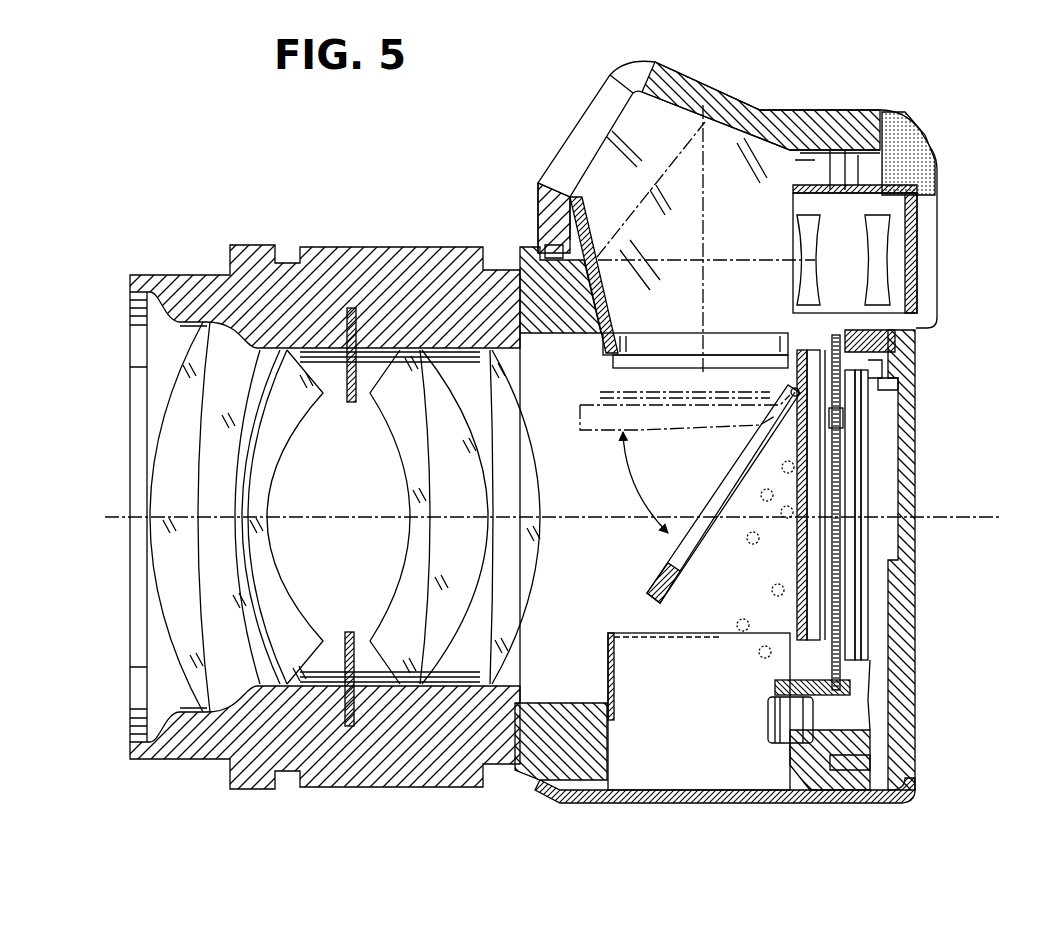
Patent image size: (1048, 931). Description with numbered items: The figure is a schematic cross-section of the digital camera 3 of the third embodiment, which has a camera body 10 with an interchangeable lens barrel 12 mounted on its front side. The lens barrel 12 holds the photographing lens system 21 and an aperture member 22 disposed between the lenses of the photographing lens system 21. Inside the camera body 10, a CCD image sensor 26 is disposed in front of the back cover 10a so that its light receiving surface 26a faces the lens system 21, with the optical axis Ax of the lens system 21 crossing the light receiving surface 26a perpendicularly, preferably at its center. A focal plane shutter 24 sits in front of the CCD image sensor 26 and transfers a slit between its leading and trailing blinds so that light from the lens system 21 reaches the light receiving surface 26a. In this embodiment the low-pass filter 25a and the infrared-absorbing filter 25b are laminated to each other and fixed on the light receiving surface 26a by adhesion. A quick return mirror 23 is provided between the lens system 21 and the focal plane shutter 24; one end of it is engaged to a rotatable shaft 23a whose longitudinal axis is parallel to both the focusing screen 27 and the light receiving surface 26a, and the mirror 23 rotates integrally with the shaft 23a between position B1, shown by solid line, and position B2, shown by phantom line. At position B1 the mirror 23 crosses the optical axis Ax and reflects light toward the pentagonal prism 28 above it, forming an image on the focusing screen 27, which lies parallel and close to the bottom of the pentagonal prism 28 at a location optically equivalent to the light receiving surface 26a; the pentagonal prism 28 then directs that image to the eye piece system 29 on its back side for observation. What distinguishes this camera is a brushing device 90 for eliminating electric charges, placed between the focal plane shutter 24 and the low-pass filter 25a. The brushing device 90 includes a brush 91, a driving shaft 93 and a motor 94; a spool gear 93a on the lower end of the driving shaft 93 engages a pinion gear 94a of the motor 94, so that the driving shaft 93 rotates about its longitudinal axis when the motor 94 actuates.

The digital camera 3 is at (557, 98).
The camera body 10 is at (840, 808).
The back cover 10a is at (898, 690).
The interchangeable lens barrel 12 is at (388, 270).
The photographing lens system 21 is at (550, 530).
The aperture member 22 is at (352, 403).
The quick return mirror 23 is at (725, 483).
The shaft 23a is at (795, 388).
The focal plane shutter 24 is at (796, 572).
The low-pass filter 25a is at (862, 542).
The infrared-absorbing filter 25b is at (856, 592).
The CCD image sensor 26 is at (866, 392).
The light receiving surface 26a is at (866, 490).
The focusing screen 27 is at (690, 362).
The pentagonal prism 28 is at (705, 100).
The eye piece system 29 is at (946, 236).
The brushing device 90 is at (758, 744).
The brush 91 is at (850, 425).
The driving shaft 93 is at (875, 645).
The spool gear 93a is at (905, 765).
The motor 94 is at (768, 720).
The pinion gear 94a is at (775, 686).
The optical axis Ax is at (562, 488).
The position B1 is at (657, 563).
The position B2 is at (602, 425).